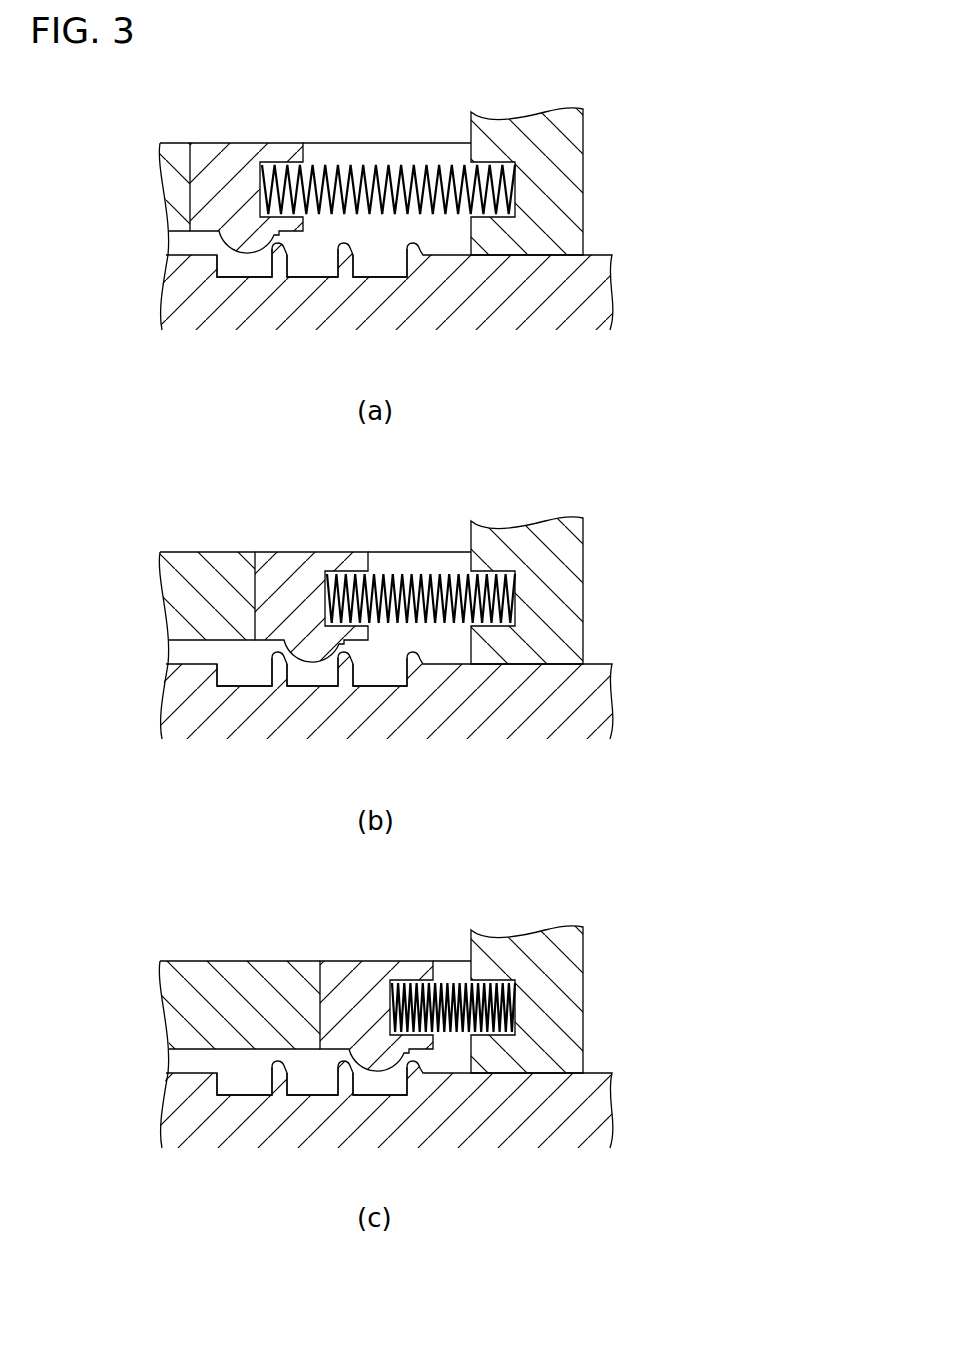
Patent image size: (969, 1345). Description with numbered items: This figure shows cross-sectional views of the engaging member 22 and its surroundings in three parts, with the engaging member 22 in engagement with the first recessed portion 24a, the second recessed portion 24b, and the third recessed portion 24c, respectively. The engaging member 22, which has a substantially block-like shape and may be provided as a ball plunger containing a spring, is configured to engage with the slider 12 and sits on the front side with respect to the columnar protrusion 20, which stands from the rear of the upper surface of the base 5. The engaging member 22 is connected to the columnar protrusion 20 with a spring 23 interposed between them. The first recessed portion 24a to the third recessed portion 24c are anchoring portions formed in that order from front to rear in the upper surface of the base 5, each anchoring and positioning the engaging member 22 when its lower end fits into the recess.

The base 5 is at (610, 296).
The slider 12 is at (160, 170).
The columnar protrusion 20 is at (572, 170).
The engaging member 22 is at (246, 152).
The spring 23 is at (357, 165).
The first recessed portion 24a is at (233, 277).
The second recessed portion 24b is at (312, 277).
The third recessed portion 24c is at (386, 273).